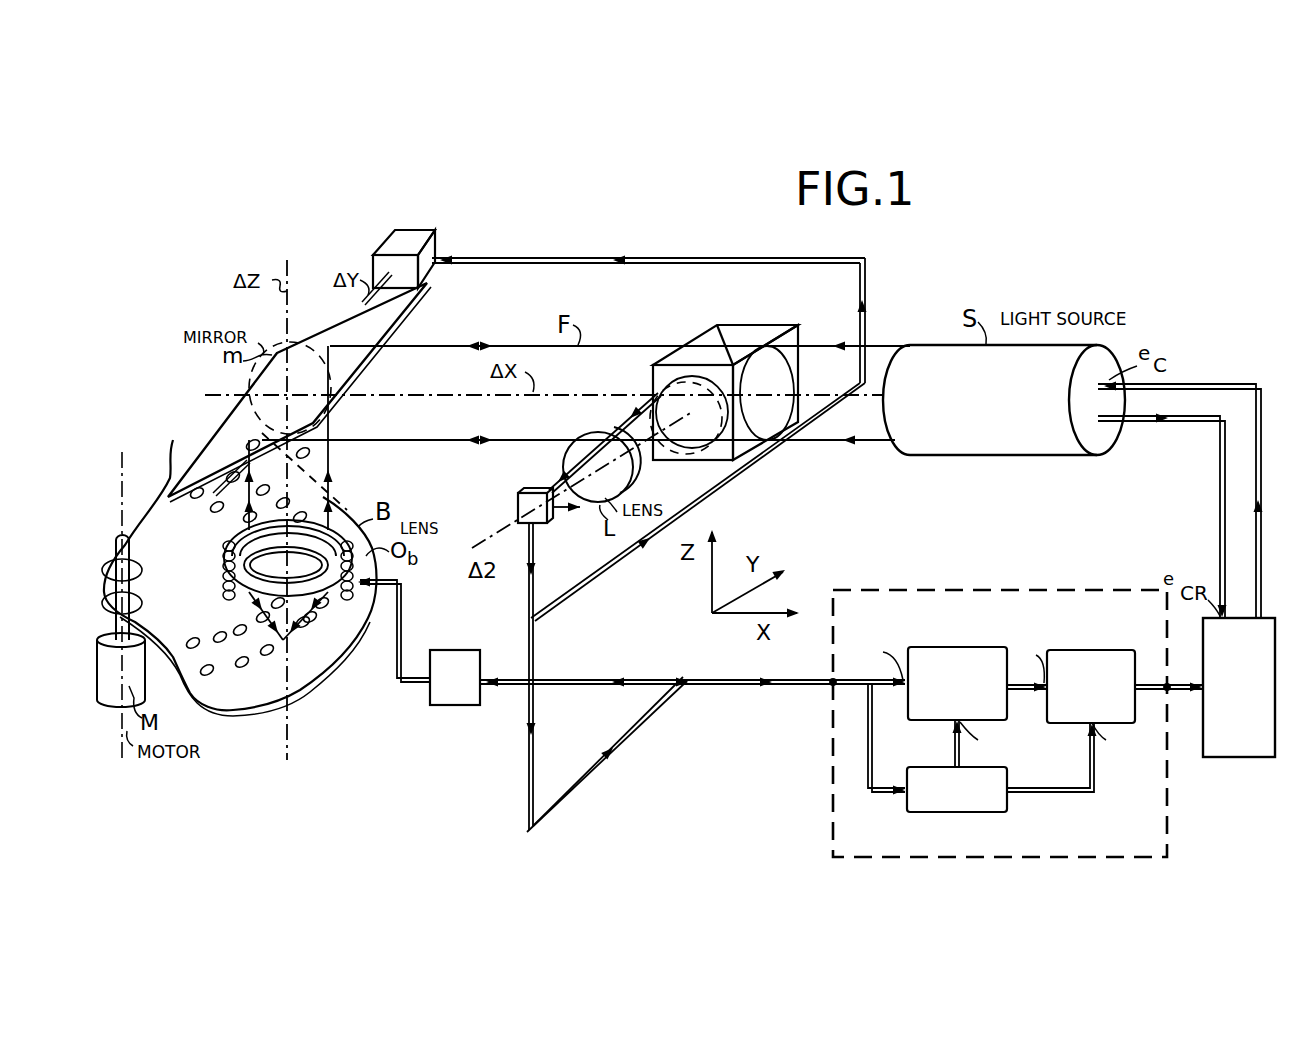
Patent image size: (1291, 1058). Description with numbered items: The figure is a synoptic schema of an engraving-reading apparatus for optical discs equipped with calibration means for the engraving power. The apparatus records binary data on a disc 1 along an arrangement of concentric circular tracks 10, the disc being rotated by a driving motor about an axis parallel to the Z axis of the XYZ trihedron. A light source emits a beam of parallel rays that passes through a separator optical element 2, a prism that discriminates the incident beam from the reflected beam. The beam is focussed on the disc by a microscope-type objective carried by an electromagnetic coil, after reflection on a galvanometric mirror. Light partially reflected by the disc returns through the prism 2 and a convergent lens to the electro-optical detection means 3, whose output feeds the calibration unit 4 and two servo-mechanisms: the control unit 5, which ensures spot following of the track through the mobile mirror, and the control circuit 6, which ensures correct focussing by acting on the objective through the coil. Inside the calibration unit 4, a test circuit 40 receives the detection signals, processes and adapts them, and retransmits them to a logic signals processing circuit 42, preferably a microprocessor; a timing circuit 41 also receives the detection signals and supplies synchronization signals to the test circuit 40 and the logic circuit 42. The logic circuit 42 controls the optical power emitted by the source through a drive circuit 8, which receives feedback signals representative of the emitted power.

The disc 1 is at (313, 675).
The separator optical element 2 is at (735, 298).
The electro-optical detection means 3 is at (517, 510).
The calibration unit 4 is at (1012, 592).
The control unit 5 is at (394, 230).
The control circuit 6 is at (454, 705).
The drive circuit 8 is at (1243, 757).
The tracks 10 is at (208, 648).
The test circuit 40 is at (969, 647).
The timing circuit 41 is at (955, 812).
The logic signals processing circuit 42 is at (1097, 649).